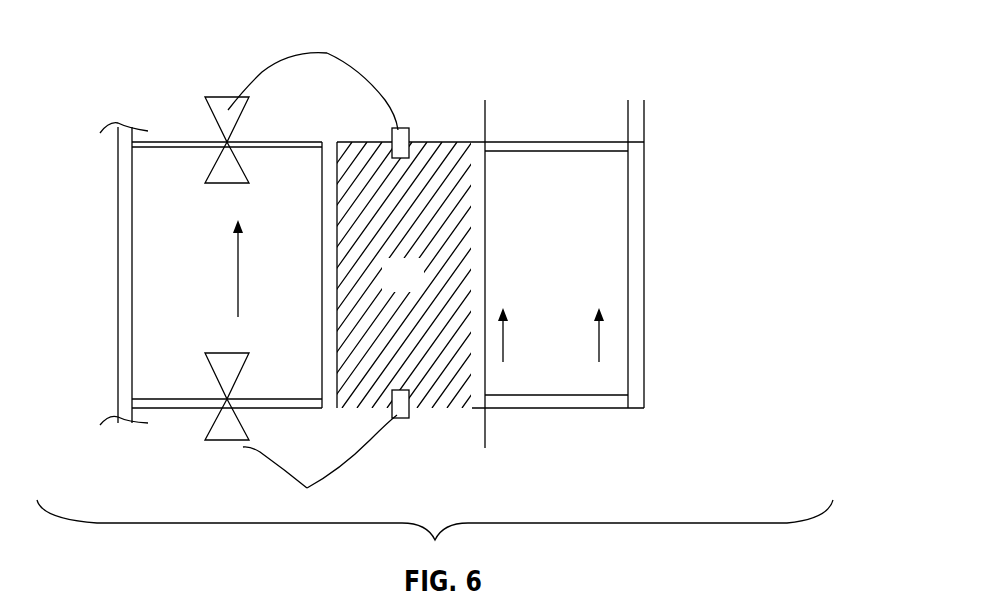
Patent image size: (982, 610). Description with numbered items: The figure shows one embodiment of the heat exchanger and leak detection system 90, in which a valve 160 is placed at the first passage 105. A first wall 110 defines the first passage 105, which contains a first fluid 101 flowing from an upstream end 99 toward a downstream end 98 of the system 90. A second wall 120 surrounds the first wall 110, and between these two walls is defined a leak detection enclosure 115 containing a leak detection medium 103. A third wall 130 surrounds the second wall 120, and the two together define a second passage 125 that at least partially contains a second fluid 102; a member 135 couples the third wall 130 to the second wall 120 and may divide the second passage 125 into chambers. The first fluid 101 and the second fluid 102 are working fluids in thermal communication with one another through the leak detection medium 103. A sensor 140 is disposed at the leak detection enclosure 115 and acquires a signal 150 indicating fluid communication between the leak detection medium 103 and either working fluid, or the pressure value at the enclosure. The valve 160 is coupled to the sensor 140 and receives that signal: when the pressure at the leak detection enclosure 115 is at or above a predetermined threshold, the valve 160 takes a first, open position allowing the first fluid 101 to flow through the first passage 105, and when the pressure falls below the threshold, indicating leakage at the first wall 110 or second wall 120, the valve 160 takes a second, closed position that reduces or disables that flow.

The system 90 is at (692, 54).
The downstream end 98 is at (402, 74).
The upstream end 99 is at (370, 494).
The first fluid 101 is at (238, 285).
The second fluid 102 is at (600, 340).
The leak detection medium 103 is at (358, 148).
The first passage 105 is at (174, 289).
The first wall 110 is at (127, 321).
The leak detection enclosure 115 is at (384, 289).
The second wall 120 is at (477, 218).
The second passage 125 is at (537, 289).
The third wall 130 is at (635, 220).
The member 135 is at (167, 140).
The sensor 140 is at (397, 135).
The signal 150 is at (313, 271).
The valve 160 is at (228, 113).